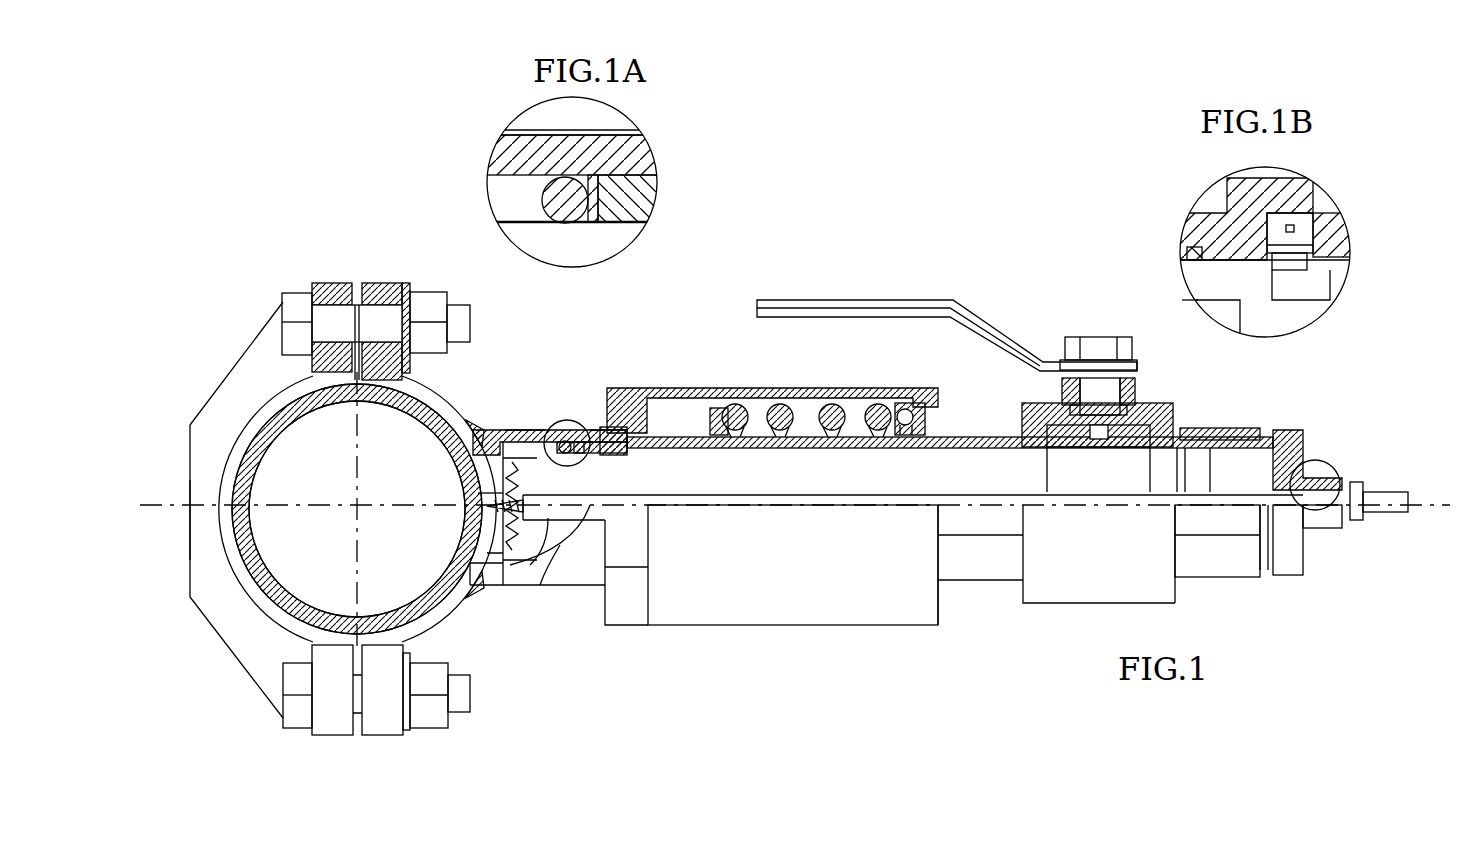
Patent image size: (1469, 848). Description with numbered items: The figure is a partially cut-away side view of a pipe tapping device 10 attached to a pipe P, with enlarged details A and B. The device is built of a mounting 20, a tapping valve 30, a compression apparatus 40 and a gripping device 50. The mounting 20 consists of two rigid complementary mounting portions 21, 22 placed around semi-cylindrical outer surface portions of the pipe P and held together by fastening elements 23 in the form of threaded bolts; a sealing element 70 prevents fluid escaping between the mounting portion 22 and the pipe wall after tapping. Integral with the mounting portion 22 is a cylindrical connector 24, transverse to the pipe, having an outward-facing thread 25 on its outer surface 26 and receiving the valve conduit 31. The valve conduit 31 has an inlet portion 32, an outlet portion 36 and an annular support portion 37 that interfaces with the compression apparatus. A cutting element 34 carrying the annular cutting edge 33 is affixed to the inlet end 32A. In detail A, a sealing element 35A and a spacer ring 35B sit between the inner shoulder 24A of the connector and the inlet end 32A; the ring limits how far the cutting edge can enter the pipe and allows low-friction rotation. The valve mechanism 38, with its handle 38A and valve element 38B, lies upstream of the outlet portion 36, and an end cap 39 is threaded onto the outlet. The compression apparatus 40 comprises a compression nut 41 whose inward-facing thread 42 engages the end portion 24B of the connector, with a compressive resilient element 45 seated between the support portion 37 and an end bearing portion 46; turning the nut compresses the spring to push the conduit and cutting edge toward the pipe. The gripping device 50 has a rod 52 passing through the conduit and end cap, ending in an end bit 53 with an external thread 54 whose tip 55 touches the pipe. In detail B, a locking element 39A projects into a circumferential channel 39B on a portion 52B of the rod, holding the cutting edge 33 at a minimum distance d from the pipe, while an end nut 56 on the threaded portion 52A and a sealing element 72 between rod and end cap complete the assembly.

In FIG. 1, the pipe tapping device 10 is at (213, 277).
In FIG. 1, the mounting 20 is at (178, 645).
In FIG. 1, the mounting portion 21 is at (242, 645).
In FIG. 1, the mounting portion 22 is at (405, 633).
In FIG. 1, the fastening elements 23 is at (428, 300).
In FIG. 1, the cylindrical connector 24 is at (480, 428).
In FIG. 1, the inner shoulder 24A is at (518, 430).
In FIG. 1, the end portion 24B is at (598, 430).
In FIG. 1, the outward-facing thread 25 is at (538, 445).
In FIG. 1, the outer surface 26 is at (612, 428).
In FIG. 1, the tapping valve 30 is at (988, 622).
In FIG. 1, the valve conduit 31 is at (985, 436).
In FIG. 1, the inlet portion 32 is at (654, 432).
In FIG. 1, the inlet end 32A is at (597, 568).
In FIG. 1A, the inlet end 32A is at (602, 197).
In FIG. 1, the cutting edge 33 is at (530, 590).
In FIG. 1, the cutting element 34 is at (555, 590).
In FIG. 1A, the sealing element 35A is at (612, 162).
In FIG. 1A, the spacer ring 35B is at (593, 210).
In FIG. 1, the outlet portion 36 is at (1196, 425).
In FIG. 1, the support portion 37 is at (722, 405).
In FIG. 1, the valve mechanism 38 is at (1148, 382).
In FIG. 1B, the valve mechanism 38 is at (1180, 323).
In FIG. 1, the handle 38A is at (832, 300).
In FIG. 1, the valve element 38B is at (1150, 402).
In FIG. 1, the end cap 39 is at (1292, 428).
In FIG. 1B, the locking element 39A is at (1340, 206).
In FIG. 1B, the circumferential channel 39B is at (1322, 260).
In FIG. 1, the compression apparatus 40 is at (826, 645).
In FIG. 1, the compression nut 41 is at (820, 398).
In FIG. 1, the inward-facing thread 42 is at (636, 400).
In FIG. 1, the compressive resilient element 45 is at (780, 405).
In FIG. 1, the end bearing portion 46 is at (908, 400).
In FIG. 1, the gripping device 50 is at (1333, 565).
In FIG. 1, the rod 52 is at (590, 590).
In FIG. 1B, the threaded portion 52A is at (1348, 265).
In FIG. 1B, the portion of rod 52B is at (1310, 290).
In FIG. 1, the end bit 53 is at (510, 590).
In FIG. 1, the external thread 54 is at (497, 600).
In FIG. 1, the tip 55 is at (173, 525).
In FIG. 1, the end nut 56 is at (1355, 525).
In FIG. 1, the sealing element 70 is at (466, 418).
In FIG. 1B, the sealing element 72 is at (1190, 250).
In FIG. 1, the pipe P is at (250, 432).
In FIG. 1, the minimum distance d is at (472, 488).
In FIG. 1, the detail A is at (574, 420).
In FIG. 1, the detail B is at (1318, 460).